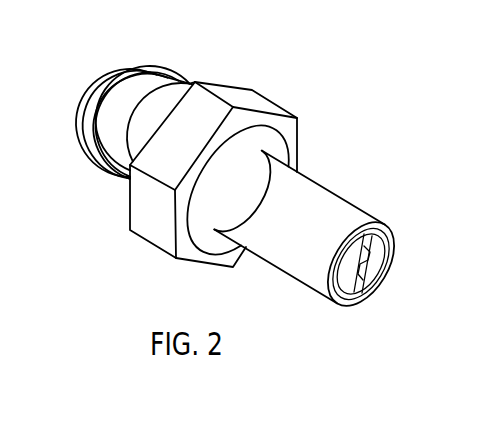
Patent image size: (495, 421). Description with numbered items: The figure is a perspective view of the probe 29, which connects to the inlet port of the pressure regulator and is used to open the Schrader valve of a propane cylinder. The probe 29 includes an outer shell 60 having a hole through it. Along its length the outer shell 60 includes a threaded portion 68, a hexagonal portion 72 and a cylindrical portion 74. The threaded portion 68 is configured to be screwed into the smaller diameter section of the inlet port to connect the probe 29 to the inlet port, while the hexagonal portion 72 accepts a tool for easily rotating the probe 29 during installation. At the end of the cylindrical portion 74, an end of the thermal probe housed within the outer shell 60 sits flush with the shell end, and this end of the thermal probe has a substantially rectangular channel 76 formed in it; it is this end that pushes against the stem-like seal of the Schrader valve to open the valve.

The probe 29 is at (364, 93).
The threaded portion 68 is at (113, 76).
The hexagonal portion 72 is at (241, 80).
The outer shell 60 is at (364, 193).
The cylindrical portion 74 is at (299, 290).
The substantially rectangular channel 76 is at (373, 251).